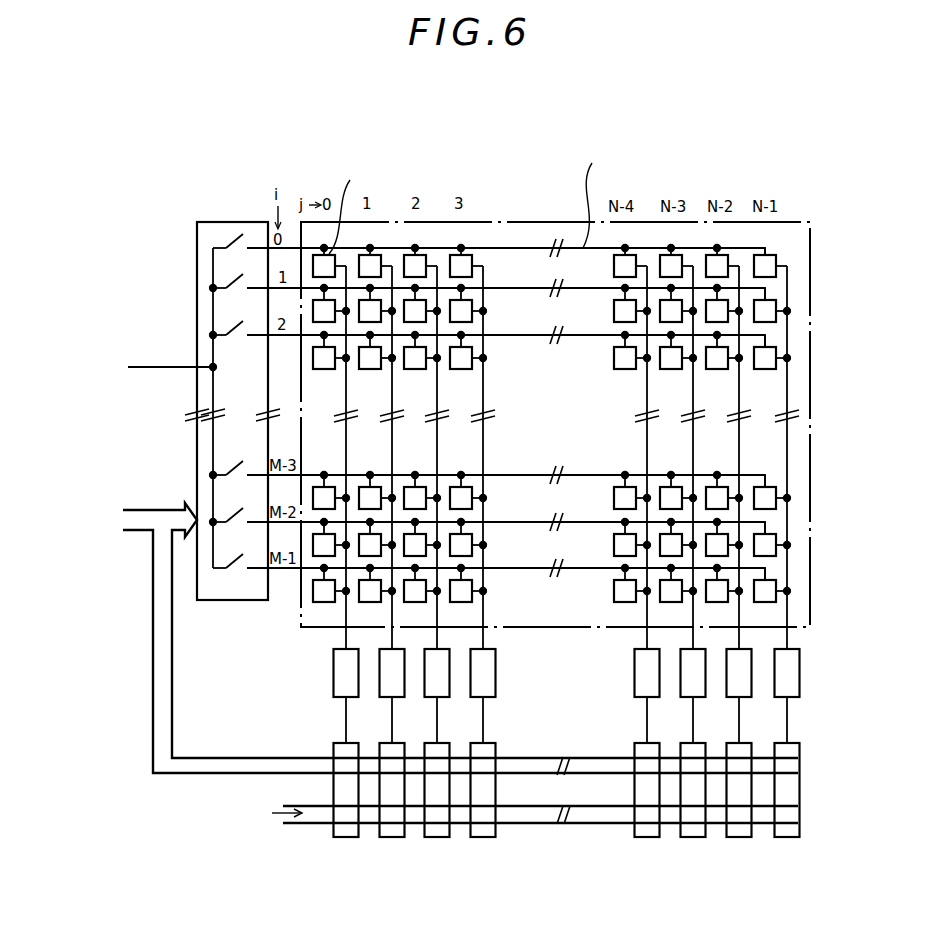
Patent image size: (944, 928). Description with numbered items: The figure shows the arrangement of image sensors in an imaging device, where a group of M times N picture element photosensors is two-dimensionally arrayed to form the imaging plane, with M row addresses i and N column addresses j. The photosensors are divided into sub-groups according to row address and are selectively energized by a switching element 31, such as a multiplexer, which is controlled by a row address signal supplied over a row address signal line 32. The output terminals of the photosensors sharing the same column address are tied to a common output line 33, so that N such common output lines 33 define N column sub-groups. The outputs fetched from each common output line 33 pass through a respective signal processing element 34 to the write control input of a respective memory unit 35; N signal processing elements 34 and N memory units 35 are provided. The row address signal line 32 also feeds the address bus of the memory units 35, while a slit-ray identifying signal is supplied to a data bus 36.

The switching element 31 is at (221, 220).
The row address signal line 32 is at (137, 496).
The common output line 33 is at (485, 380).
The signal processing element 34 is at (334, 675).
The memory unit 35 is at (346, 838).
The data bus 36 is at (593, 824).